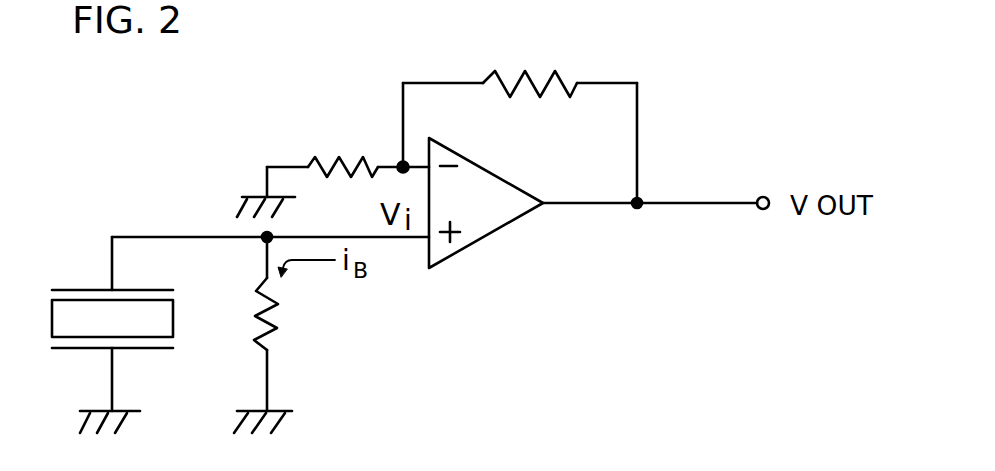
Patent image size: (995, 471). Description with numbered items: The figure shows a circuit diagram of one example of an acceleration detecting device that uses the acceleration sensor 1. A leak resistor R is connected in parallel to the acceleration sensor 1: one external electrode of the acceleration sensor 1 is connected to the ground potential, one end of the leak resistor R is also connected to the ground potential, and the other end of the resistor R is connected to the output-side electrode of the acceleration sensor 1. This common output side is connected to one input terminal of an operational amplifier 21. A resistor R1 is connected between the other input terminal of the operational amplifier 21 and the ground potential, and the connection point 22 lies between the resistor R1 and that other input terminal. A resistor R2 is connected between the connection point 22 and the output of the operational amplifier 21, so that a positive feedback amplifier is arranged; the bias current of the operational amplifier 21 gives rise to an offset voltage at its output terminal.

The acceleration sensor 1 is at (45, 278).
The operational amplifier 21 is at (473, 245).
The connection point 22 is at (400, 163).
The leak resistor R is at (280, 307).
The resistor R1 is at (343, 156).
The resistor R2 is at (526, 72).